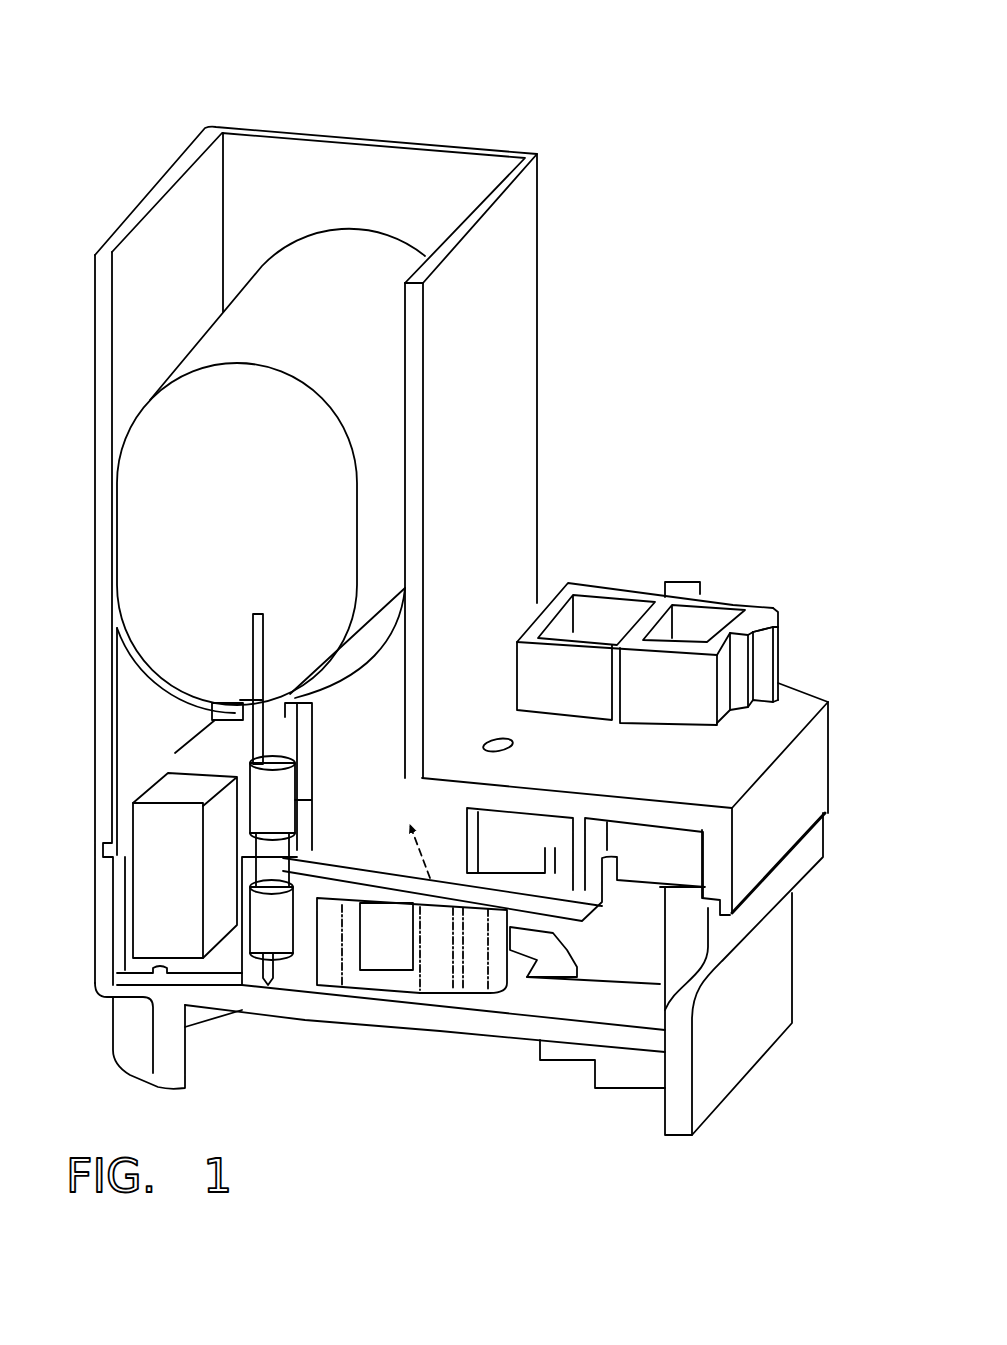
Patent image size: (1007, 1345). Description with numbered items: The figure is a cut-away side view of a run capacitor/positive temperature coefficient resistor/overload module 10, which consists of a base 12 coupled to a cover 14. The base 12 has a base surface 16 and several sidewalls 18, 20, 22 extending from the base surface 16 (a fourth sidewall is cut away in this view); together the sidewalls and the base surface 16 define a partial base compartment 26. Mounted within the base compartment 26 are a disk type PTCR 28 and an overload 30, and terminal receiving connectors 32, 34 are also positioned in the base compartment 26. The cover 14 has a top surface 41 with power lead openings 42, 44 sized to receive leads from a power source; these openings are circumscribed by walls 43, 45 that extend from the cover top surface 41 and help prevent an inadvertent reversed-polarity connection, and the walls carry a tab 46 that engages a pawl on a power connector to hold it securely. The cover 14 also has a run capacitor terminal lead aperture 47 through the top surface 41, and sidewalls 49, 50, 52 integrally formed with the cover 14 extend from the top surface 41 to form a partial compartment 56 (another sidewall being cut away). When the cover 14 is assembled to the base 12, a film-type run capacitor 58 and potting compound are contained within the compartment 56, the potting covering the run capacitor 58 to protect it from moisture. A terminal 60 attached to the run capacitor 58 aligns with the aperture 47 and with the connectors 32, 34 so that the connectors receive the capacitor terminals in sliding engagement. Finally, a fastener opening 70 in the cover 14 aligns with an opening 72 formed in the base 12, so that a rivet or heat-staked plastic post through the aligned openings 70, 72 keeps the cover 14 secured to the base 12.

The run capacitor/positive temperature coefficient resistor/overload (CAP/PTCR/OL) m 10 is at (146, 58).
The base 12 is at (705, 974).
The cover 14 is at (585, 754).
The base surface 16 is at (410, 1018).
The sidewall 18 is at (95, 960).
The sidewall 20 is at (807, 929).
The sidewall 22 is at (762, 1018).
The base compartment 26 is at (522, 995).
The PTCR 28 is at (622, 967).
The overload 30 is at (186, 950).
The terminal receiving connector 32 is at (248, 882).
The terminal receiving connector 34 is at (235, 780).
The cover top surface 41 is at (800, 697).
The power lead opening 42 is at (669, 620).
The wall 43 is at (587, 580).
The power lead opening 44 is at (717, 620).
The wall 45 is at (747, 607).
The tab 46 is at (678, 585).
The run capacitor terminal lead aperture 47 is at (212, 712).
The sidewall 49 is at (95, 380).
The sidewall 50 is at (325, 529).
The sidewall 52 is at (528, 437).
The compartment 56 is at (430, 176).
The run capacitor 58 is at (160, 445).
The terminal 60 is at (313, 718).
The fastener opening 70 is at (515, 740).
The opening 72 is at (432, 938).